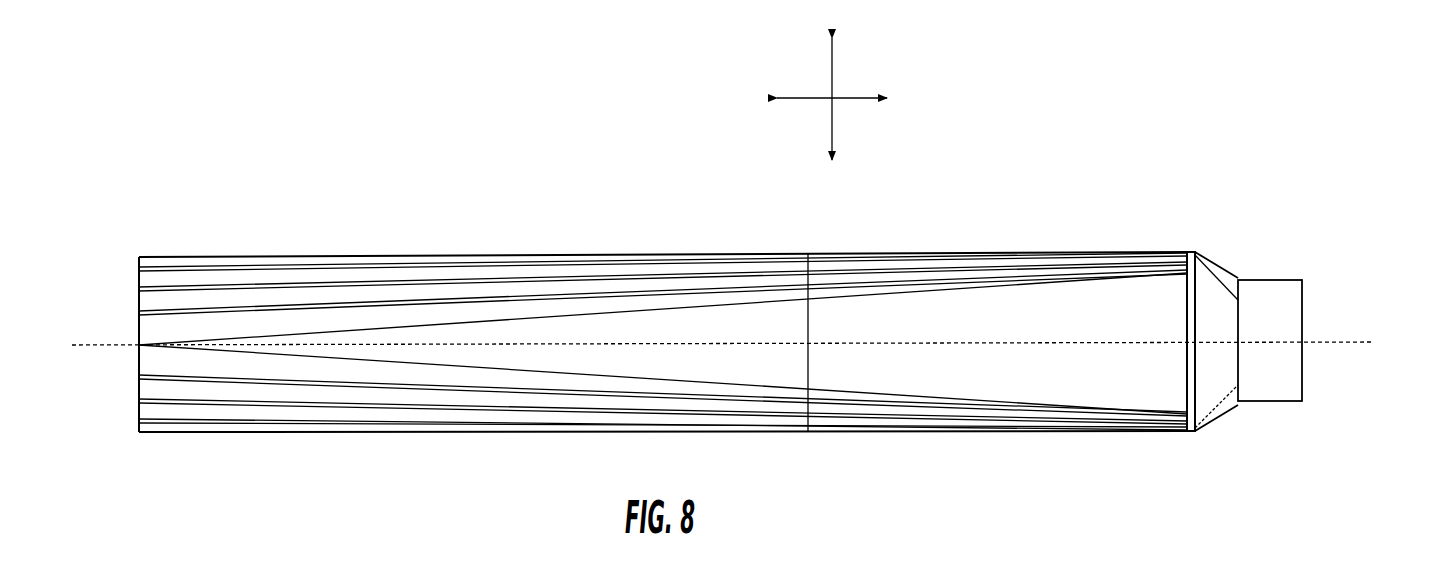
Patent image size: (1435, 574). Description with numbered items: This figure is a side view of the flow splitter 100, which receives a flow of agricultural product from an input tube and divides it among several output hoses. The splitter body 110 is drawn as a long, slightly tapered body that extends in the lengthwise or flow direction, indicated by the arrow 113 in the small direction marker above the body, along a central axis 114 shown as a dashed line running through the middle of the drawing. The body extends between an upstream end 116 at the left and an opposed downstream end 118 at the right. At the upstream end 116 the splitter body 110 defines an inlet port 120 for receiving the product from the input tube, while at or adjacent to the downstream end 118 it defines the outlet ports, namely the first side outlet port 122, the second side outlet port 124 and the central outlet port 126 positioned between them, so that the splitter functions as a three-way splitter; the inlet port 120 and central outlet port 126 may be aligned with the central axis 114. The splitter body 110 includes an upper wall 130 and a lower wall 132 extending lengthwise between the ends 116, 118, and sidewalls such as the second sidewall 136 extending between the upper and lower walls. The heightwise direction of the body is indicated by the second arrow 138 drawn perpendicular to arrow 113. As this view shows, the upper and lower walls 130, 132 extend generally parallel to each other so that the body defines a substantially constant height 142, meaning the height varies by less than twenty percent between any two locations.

The flow splitter 100 is at (185, 120).
The splitter body 110 is at (405, 250).
The lengthwise direction 113 is at (808, 96).
The central axis 114 is at (1318, 340).
The upstream end 116 is at (129, 291).
The downstream end 118 is at (1328, 251).
The inlet port 120 is at (139, 402).
The first side outlet port 122 is at (1303, 378).
The second side outlet port 124 is at (1216, 341).
The central outlet port 126 is at (1191, 341).
The upper wall 130 is at (577, 255).
The lower wall 132 is at (555, 433).
The second sidewall 136 is at (431, 381).
The heightwise direction arrow 138 is at (835, 86).
The height 142 is at (815, 307).